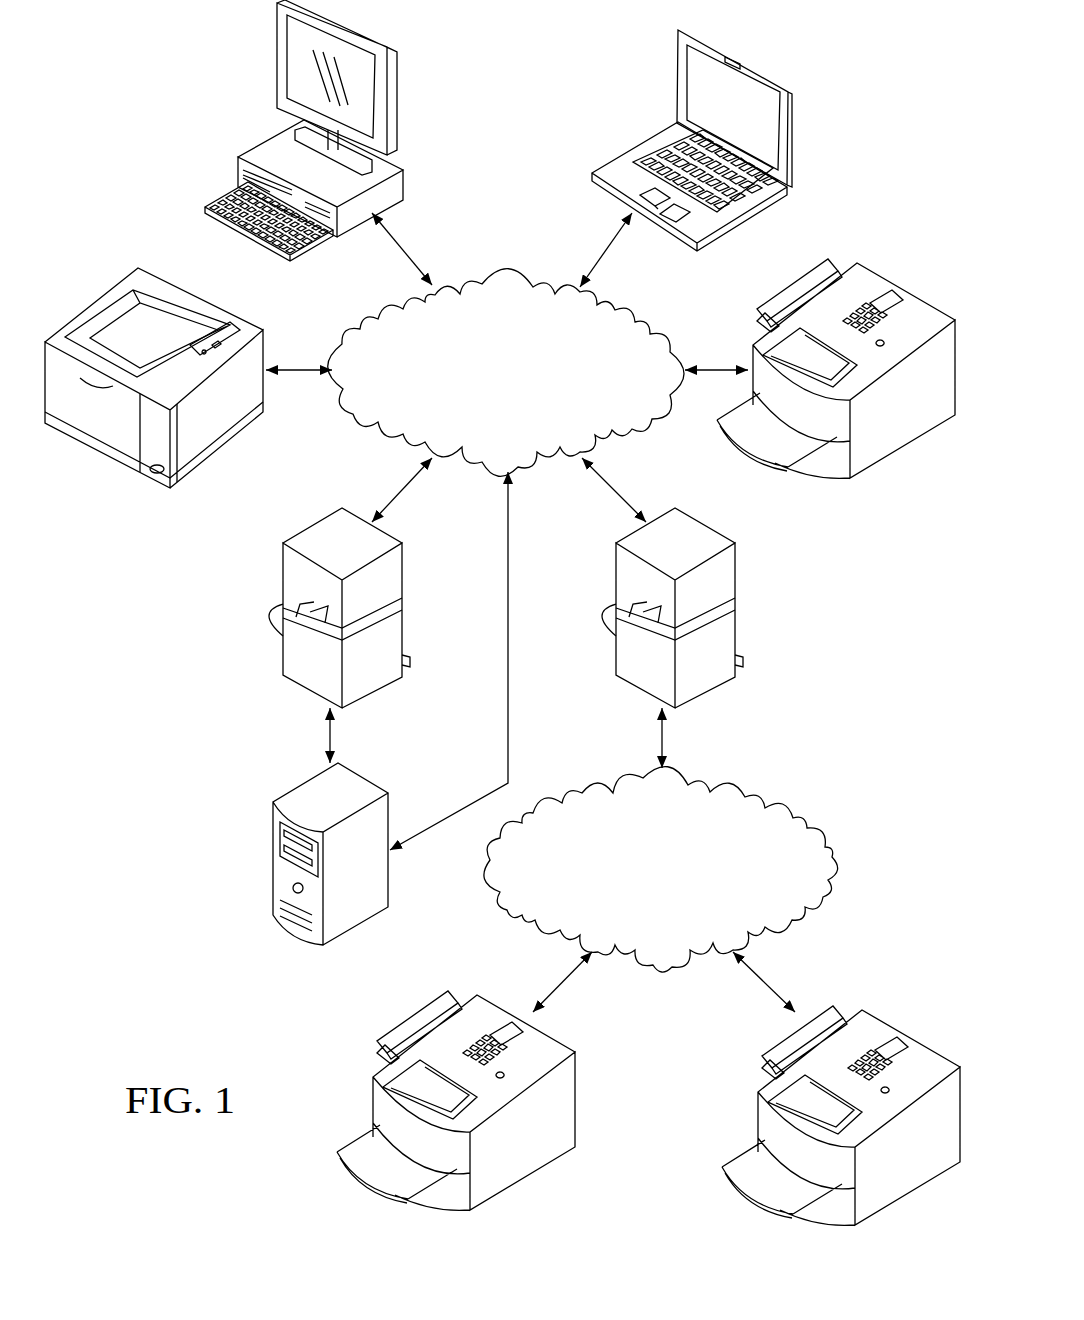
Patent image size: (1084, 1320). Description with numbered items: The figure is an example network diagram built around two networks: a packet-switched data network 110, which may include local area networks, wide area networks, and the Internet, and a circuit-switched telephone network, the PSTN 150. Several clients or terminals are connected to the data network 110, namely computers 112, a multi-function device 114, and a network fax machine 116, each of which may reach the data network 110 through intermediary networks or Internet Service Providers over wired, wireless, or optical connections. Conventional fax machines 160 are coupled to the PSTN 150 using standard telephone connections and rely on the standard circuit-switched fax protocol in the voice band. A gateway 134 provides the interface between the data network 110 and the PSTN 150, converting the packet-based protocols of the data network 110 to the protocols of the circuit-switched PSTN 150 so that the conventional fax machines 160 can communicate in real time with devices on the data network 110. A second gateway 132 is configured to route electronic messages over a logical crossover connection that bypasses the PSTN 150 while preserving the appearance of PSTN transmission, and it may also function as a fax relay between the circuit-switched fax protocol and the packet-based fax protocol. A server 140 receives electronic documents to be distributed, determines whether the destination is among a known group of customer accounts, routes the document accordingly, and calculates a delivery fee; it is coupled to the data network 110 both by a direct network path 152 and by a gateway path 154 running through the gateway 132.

The data network 110 is at (487, 407).
The computers 112 is at (275, 50).
The multi-function device 114 is at (100, 295).
The network fax machine 116 is at (907, 290).
The gateway 132 is at (280, 655).
The gateway 134 is at (740, 643).
The server 140 is at (272, 858).
The PSTN 150 is at (643, 906).
The direct network path 152 is at (507, 627).
The gateway path 154 is at (405, 490).
The conventional fax machines 160 is at (523, 1180).